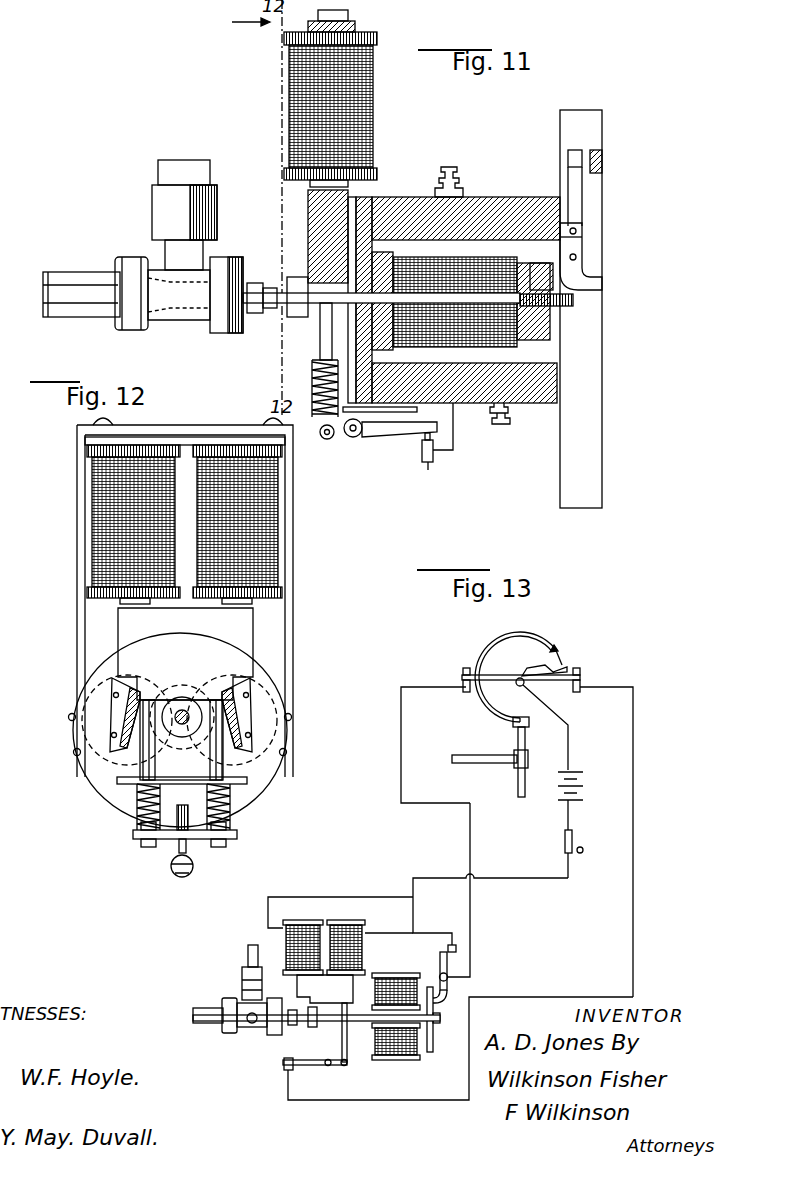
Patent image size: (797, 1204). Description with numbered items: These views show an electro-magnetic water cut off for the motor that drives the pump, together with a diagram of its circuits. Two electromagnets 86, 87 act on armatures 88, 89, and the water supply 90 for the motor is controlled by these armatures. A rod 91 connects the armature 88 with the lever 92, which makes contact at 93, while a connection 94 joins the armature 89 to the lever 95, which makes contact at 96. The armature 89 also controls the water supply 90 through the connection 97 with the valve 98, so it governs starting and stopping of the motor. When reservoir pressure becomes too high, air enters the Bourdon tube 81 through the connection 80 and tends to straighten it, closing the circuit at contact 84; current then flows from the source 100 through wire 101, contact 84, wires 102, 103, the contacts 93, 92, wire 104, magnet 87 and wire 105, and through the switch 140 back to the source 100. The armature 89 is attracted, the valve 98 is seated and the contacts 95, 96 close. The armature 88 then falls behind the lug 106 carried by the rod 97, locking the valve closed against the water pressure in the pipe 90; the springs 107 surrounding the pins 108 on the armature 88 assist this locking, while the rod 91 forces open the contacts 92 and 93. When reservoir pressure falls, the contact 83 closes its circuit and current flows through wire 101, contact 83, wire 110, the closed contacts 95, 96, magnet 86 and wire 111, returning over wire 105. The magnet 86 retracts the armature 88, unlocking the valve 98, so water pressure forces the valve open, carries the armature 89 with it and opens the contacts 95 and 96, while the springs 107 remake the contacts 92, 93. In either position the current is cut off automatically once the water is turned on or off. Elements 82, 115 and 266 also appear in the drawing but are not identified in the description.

In FIG. 13, the connection 80 is at (519, 790).
In FIG. 13, the Bourdon tube 81 is at (490, 650).
In FIG. 13, the contact arm 82 is at (529, 676).
In FIG. 13, the contact 83 is at (465, 676).
In FIG. 13, the contact 84 is at (581, 681).
In FIG. 11, the electromagnet 86 is at (373, 107).
In FIG. 12, the electromagnet 86 is at (93, 504).
In FIG. 13, the electromagnet 86 is at (348, 925).
In FIG. 11, the electromagnet 87 is at (470, 260).
In FIG. 12, the electromagnet 87 is at (107, 747).
In FIG. 13, the electromagnet 87 is at (393, 972).
In FIG. 11, the armature 88 is at (323, 230).
In FIG. 12, the armature 88 is at (185, 654).
In FIG. 13, the armature 88 is at (297, 985).
In FIG. 11, the armature 89 is at (540, 327).
In FIG. 13, the armature 89 is at (433, 1040).
In FIG. 11, the water supply 90 is at (70, 283).
In FIG. 13, the water supply 90 is at (200, 1013).
In FIG. 11, the rod 91 is at (328, 320).
In FIG. 13, the rod 91 is at (346, 1022).
In FIG. 11, the lever 92 is at (385, 434).
In FIG. 12, the lever 92 is at (176, 855).
In FIG. 13, the lever 92 is at (283, 1063).
In FIG. 11, the contact 93 is at (428, 468).
In FIG. 12, the contact 93 is at (191, 866).
In FIG. 13, the contact 93 is at (290, 1071).
In FIG. 11, the connection 94 is at (570, 275).
In FIG. 13, the connection 94 is at (447, 1003).
In FIG. 11, the lever 95 is at (577, 202).
In FIG. 13, the lever 95 is at (448, 963).
In FIG. 11, the contact 96 is at (570, 160).
In FIG. 13, the contact 96 is at (456, 946).
In FIG. 11, the connection 97 is at (325, 330).
In FIG. 12, the connection 97 is at (182, 705).
In FIG. 13, the connection 97 is at (342, 1003).
In FIG. 13, the valve 98 is at (252, 1027).
In FIG. 13, the source of current 100 is at (589, 789).
In FIG. 13, the wire 101 is at (553, 707).
In FIG. 13, the wire 102 is at (634, 777).
In FIG. 13, the wire 103 is at (450, 1100).
In FIG. 13, the wire 104 is at (385, 1061).
In FIG. 13, the wire 105 is at (442, 866).
In FIG. 11, the lug 106 is at (291, 318).
In FIG. 12, the lug 106 is at (194, 697).
In FIG. 13, the lug 106 is at (307, 1023).
In FIG. 11, the springs 107 is at (313, 406).
In FIG. 12, the springs 107 is at (137, 808).
In FIG. 12, the pins 108 is at (150, 771).
In FIG. 13, the wire 110 is at (401, 738).
In FIG. 13, the wire 111 is at (353, 893).
In FIG. 13, the valve 115 is at (248, 957).
In FIG. 13, the switch 140 is at (565, 843).
In FIG. 13, the lever 266 is at (481, 752).